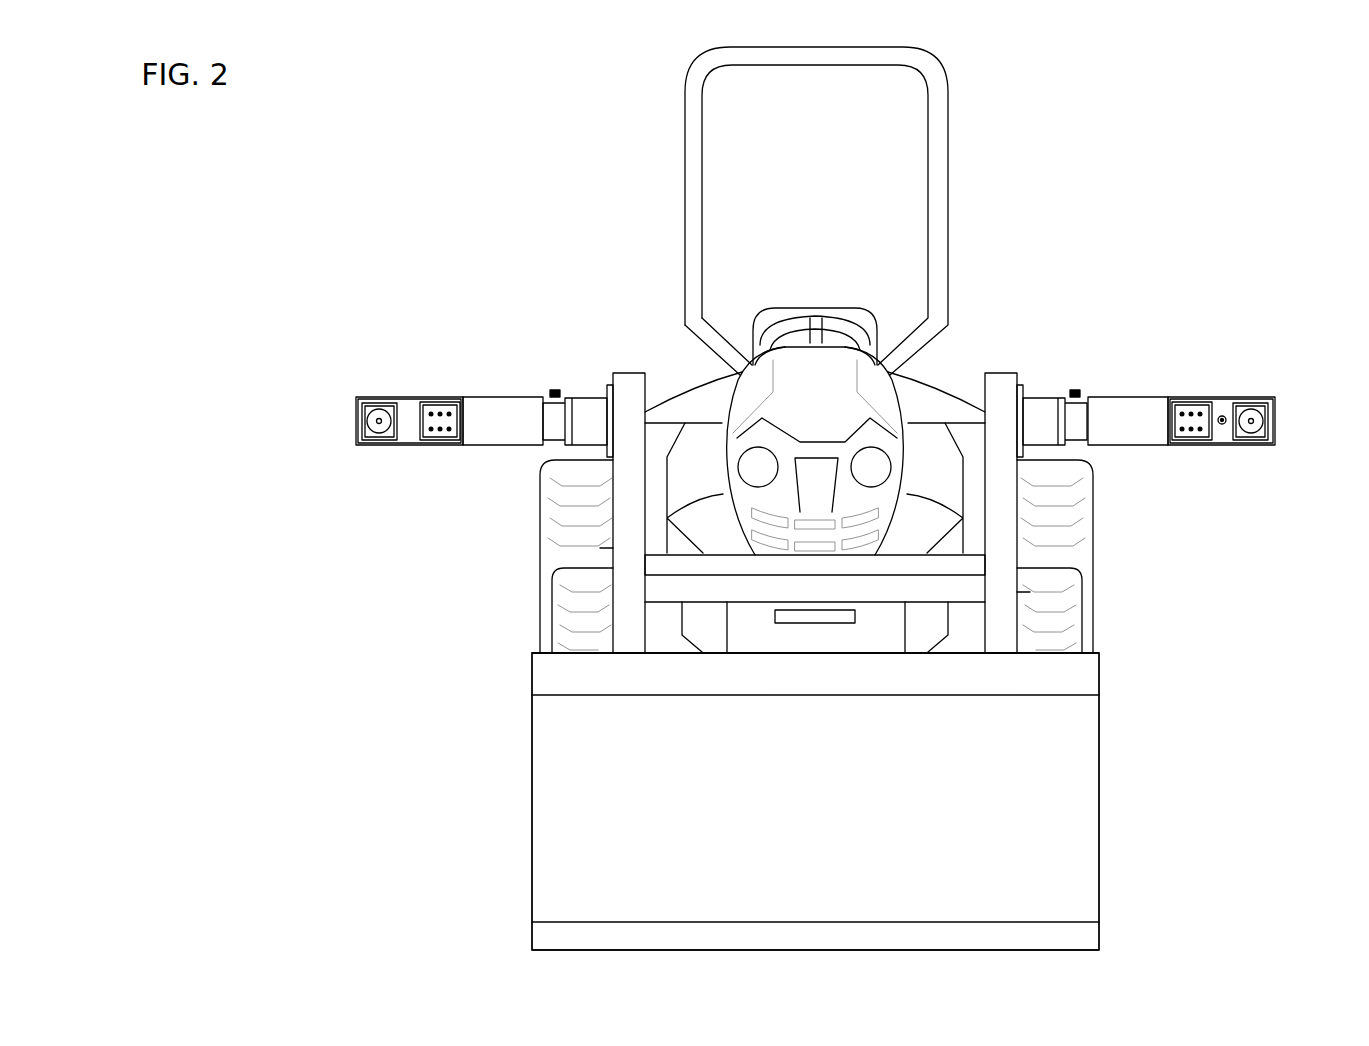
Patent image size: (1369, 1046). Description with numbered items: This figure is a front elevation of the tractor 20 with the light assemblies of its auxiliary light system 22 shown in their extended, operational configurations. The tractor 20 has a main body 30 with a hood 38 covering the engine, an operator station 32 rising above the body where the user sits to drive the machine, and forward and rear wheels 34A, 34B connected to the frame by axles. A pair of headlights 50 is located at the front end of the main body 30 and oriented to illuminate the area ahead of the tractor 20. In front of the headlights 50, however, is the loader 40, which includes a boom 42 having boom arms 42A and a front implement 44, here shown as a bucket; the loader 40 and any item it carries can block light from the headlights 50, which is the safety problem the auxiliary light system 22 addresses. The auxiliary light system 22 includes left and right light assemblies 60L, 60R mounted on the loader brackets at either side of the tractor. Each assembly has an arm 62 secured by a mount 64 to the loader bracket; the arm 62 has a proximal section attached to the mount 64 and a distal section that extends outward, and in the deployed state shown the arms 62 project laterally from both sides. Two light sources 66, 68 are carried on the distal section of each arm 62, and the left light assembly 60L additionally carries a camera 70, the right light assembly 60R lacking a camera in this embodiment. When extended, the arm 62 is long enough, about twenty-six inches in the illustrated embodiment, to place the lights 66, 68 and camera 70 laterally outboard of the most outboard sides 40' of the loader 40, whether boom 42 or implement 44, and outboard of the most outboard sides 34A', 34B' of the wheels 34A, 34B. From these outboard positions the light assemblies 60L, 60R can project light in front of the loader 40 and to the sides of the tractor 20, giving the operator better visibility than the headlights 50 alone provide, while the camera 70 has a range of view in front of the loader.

The tractor 20 is at (1238, 120).
The auxiliary light system 22 is at (480, 278).
The main body 30 is at (718, 392).
The operator station 32 is at (736, 278).
The forward wheels 34A is at (818, 631).
The most outboard sides of the front wheels 34A' is at (810, 621).
The rear wheels 34B is at (829, 556).
The most outboard sides of the rear wheels 34B' is at (812, 504).
The hood 38 is at (890, 400).
The loader 40 is at (755, 801).
The most outboard sides of the loader 40' is at (819, 710).
The boom 42 is at (1024, 542).
The boom arms 42A is at (613, 552).
The front implement 44 is at (1099, 836).
The headlights 50 is at (762, 452).
The right light assembly 60R is at (420, 366).
The left light assembly 60L is at (1212, 366).
The arm 62 is at (498, 394).
The mount 64 is at (584, 392).
The light source 66 is at (436, 442).
The light source 68 is at (362, 424).
The camera 70 is at (1223, 428).